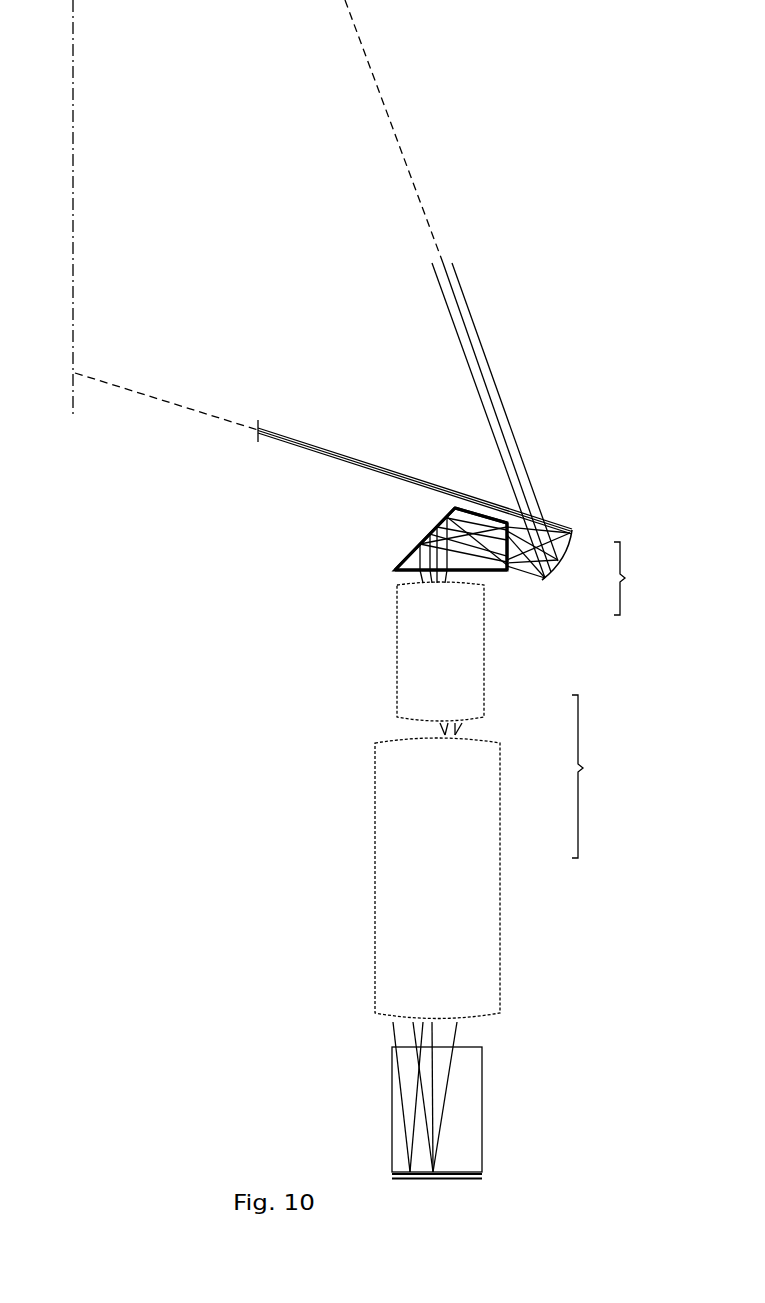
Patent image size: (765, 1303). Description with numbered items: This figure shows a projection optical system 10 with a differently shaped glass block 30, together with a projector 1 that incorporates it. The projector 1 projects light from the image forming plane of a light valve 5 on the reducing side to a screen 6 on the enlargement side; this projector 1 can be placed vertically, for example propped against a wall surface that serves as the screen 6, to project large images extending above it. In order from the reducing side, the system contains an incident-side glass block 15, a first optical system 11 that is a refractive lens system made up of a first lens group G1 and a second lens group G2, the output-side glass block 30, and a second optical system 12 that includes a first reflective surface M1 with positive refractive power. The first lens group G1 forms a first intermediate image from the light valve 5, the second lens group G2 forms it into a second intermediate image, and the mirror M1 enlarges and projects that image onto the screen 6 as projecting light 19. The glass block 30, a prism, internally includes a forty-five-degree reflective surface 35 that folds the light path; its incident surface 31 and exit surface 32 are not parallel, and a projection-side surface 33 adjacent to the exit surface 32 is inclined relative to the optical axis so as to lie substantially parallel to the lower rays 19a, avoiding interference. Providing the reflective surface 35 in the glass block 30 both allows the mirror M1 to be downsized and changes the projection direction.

The projector 1 is at (309, 745).
The light valve 5 is at (460, 1178).
The screen 6 is at (73, 366).
The projection optical system 10 is at (615, 903).
The first optical system 11 is at (592, 776).
The second optical system 12 is at (634, 578).
The incident-side glass block 15 is at (473, 1078).
The projecting light 19 is at (426, 258).
The lower rays 19a is at (310, 446).
The glass block 30 is at (498, 577).
The incident surface 31 is at (398, 575).
The exit surface 32 is at (510, 568).
The projection-side surface 33 is at (477, 508).
The 45-degree reflective surface 35 is at (420, 543).
The first lens group G1 is at (480, 820).
The second lens group G2 is at (480, 685).
The first reflective surface M1 is at (565, 558).